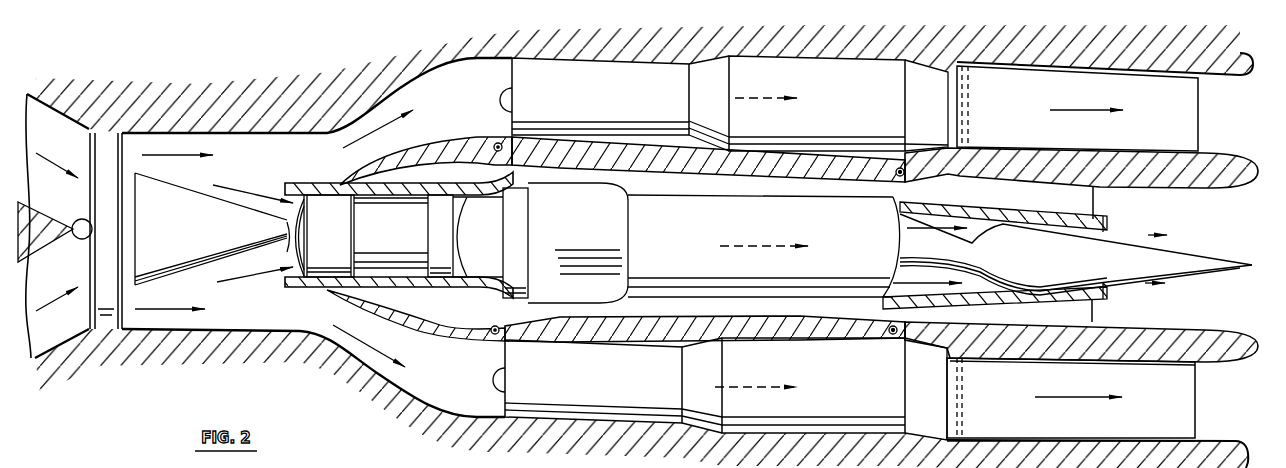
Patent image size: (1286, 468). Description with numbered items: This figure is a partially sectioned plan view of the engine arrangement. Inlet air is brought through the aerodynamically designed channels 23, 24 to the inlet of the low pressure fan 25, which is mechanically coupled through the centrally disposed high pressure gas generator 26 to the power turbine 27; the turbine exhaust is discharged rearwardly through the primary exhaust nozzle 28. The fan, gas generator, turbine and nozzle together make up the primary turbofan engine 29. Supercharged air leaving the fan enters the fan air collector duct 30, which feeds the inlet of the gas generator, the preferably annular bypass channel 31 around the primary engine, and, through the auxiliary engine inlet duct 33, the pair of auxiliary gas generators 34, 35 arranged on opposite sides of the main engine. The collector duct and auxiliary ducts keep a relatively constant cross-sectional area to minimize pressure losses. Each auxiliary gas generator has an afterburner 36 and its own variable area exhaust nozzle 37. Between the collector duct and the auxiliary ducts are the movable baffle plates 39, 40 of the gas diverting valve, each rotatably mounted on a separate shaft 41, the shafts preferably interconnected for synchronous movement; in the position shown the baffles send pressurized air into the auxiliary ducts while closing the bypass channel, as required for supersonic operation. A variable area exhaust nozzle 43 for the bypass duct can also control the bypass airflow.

The aerodynamically designed channel 23 is at (29, 362).
The aerodynamically designed channel 24 is at (55, 220).
The low pressure fan 25 is at (116, 303).
The high pressure gas generator 26 is at (370, 236).
The power turbine 27 is at (490, 243).
The primary exhaust nozzle 28 is at (1107, 231).
The primary turbofan engine 29 is at (307, 293).
The fan air collector duct 30 is at (214, 231).
The bypass channel 31 is at (714, 250).
The auxiliary engine inlet duct 33 is at (437, 90).
The auxiliary gas generator 34 is at (587, 381).
The auxiliary gas generator 35 is at (594, 96).
The afterburner 36 is at (815, 248).
The variable area exhaust nozzle 37 is at (1202, 122).
The baffle plate 39 is at (397, 325).
The baffle plate 40 is at (442, 140).
The shaft 41 is at (494, 150).
The variable area exhaust nozzle 43 is at (1080, 202).